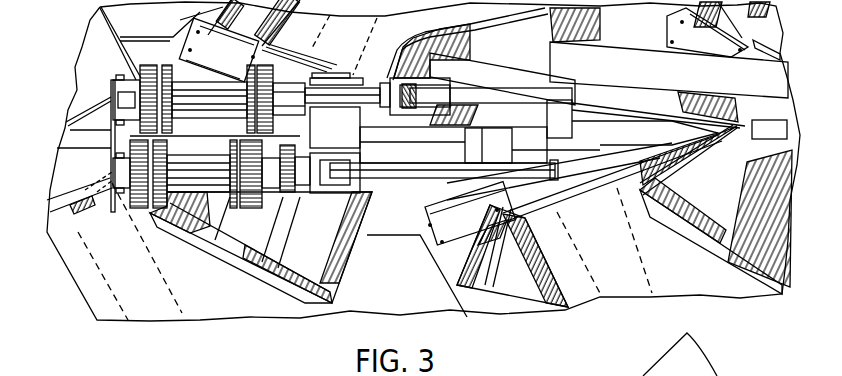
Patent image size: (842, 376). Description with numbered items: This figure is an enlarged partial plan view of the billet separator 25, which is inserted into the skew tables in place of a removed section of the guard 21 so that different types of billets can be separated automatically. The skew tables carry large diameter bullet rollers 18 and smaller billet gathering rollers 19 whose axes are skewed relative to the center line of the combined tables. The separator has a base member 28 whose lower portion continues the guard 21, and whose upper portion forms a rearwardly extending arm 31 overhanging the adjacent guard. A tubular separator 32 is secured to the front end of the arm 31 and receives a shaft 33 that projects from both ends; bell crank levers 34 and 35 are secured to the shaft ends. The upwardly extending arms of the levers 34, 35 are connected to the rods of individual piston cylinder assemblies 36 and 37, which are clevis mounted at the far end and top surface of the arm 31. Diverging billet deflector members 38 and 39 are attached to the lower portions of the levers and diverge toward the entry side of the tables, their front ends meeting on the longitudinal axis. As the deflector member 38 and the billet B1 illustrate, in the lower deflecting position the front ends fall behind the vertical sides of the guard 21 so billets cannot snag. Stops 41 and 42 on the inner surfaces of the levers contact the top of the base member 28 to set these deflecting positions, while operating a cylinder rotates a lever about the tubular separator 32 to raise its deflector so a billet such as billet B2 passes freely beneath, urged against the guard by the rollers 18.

The bullet rollers 18 is at (508, 56).
The billet gathering rollers 19 is at (288, 20).
The guard 21 is at (67, 129).
The billet separator 25 is at (413, 184).
The base member 28 is at (388, 135).
The rearwardly extending arm 31 is at (213, 142).
The tubular separator 32 is at (343, 134).
The shaft 33 is at (330, 68).
The bell crank lever 34 is at (515, 102).
The bell crank lever 35 is at (427, 176).
The piston cylinder assembly 36 is at (220, 94).
The piston cylinder assembly 37 is at (222, 186).
The billet deflector member 38 is at (504, 82).
The billet deflector member 39 is at (617, 153).
The stop 41 is at (565, 127).
The stop 42 is at (501, 151).
The billet B1 is at (663, 83).
The billet B2 is at (84, 178).